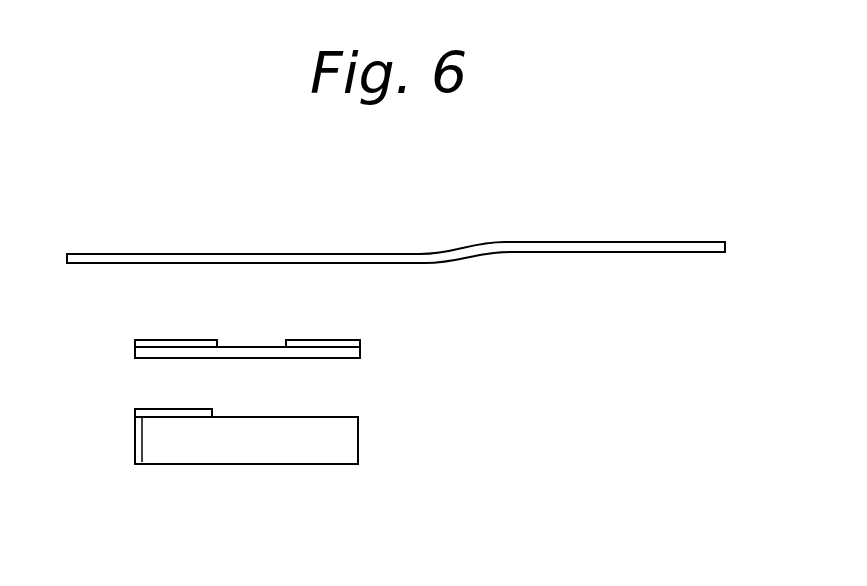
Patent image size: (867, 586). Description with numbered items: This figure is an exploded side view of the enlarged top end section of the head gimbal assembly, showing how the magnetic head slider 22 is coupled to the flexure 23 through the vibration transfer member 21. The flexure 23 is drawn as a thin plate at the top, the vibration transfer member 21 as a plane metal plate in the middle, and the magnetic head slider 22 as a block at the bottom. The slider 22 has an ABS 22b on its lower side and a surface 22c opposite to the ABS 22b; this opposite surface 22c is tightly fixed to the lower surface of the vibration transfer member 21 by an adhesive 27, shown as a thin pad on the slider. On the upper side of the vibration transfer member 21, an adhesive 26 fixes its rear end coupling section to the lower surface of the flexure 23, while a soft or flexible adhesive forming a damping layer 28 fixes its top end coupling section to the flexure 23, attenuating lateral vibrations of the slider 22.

The flexure 23 is at (642, 242).
The vibration transfer member 21 is at (360, 349).
The damping layer 28 is at (162, 343).
The adhesive 26 is at (334, 342).
The magnetic head slider 22 is at (352, 447).
The surface opposite to the ABS 22c is at (290, 414).
The ABS 22b is at (255, 455).
The adhesive 27 is at (160, 412).